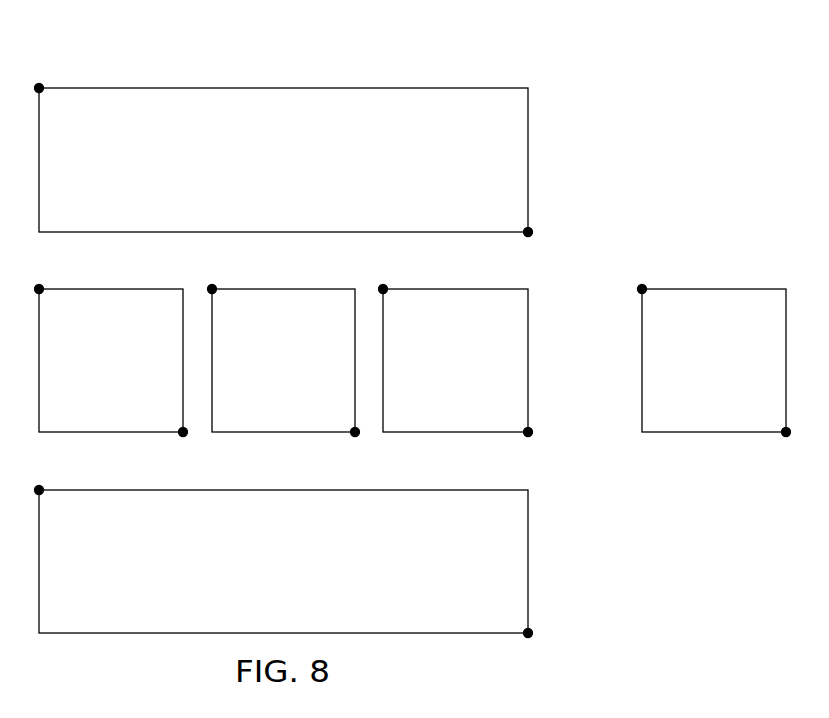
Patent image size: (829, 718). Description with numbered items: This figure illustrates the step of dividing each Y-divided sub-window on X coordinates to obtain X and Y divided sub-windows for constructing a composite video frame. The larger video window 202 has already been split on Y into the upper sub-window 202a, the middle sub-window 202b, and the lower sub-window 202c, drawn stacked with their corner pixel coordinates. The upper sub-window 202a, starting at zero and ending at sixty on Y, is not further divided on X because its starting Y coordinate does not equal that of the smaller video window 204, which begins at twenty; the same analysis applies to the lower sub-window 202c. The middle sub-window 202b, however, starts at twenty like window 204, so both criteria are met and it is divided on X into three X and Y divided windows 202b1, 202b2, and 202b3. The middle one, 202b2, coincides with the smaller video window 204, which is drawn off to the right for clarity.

The larger video window 202 is at (168, 64).
The upper Y-divided sub-window 202a is at (306, 174).
The middle Y-divided sub-window 202b is at (548, 328).
The X and Y divided sub-window 202b1 is at (130, 373).
The middle X and Y divided sub-window 202b2 is at (300, 373).
The X and Y divided sub-window 202b3 is at (471, 373).
The lower Y-divided sub-window 202c is at (306, 574).
The smaller video window 204 is at (714, 288).